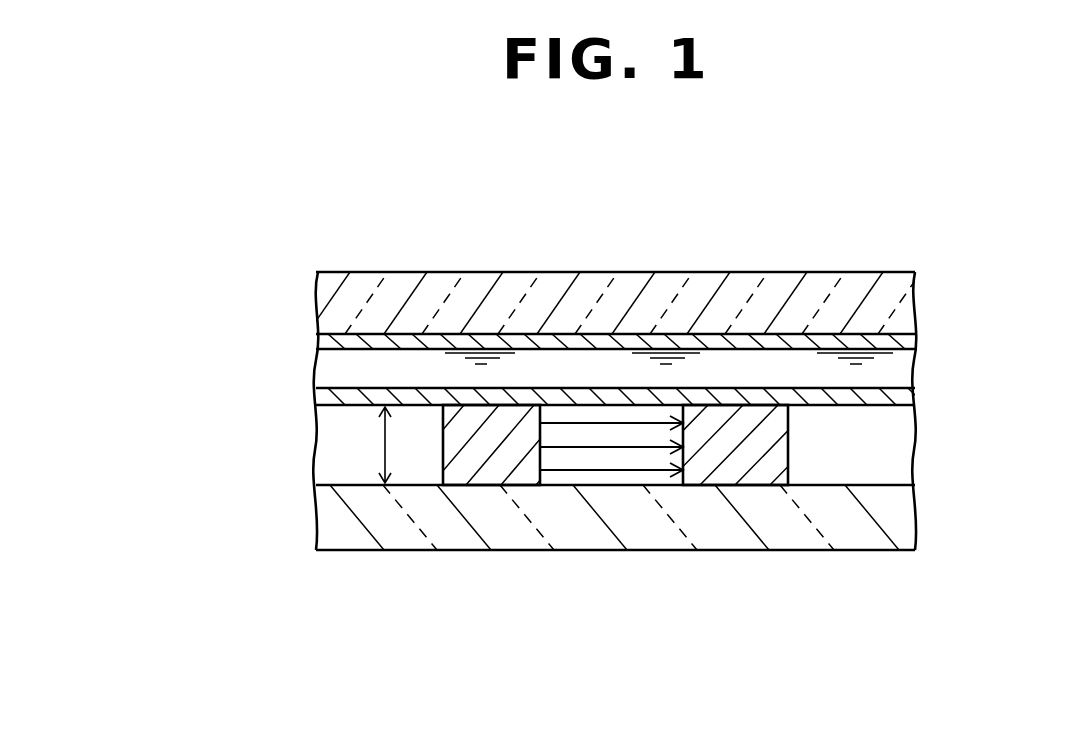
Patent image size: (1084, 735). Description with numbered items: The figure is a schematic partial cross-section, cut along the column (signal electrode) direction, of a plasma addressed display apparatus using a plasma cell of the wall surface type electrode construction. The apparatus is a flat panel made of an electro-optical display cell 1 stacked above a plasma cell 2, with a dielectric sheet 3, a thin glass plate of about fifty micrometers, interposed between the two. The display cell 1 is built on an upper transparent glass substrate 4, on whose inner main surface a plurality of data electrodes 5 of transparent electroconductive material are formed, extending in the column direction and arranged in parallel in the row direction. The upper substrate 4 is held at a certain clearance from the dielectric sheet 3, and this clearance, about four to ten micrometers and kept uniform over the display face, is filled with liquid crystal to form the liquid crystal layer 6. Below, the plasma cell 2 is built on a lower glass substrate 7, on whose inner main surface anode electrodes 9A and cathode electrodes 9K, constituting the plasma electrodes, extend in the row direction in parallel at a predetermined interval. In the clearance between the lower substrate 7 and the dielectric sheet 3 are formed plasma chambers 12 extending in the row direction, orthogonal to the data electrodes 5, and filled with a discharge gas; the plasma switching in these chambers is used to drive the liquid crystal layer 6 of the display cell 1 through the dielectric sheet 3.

The electro-optical display cell 1 is at (527, 253).
The plasma cell 2 is at (523, 556).
The dielectric sheet 3 is at (317, 402).
The upper transparent glass substrate 4 is at (568, 273).
The data electrodes 5 is at (408, 340).
The liquid crystal layer 6 is at (766, 375).
The lower glass substrate 7 is at (343, 535).
The cathode electrodes 9K is at (482, 453).
The anode electrodes 9A is at (740, 462).
The plasma chambers 12 is at (623, 477).